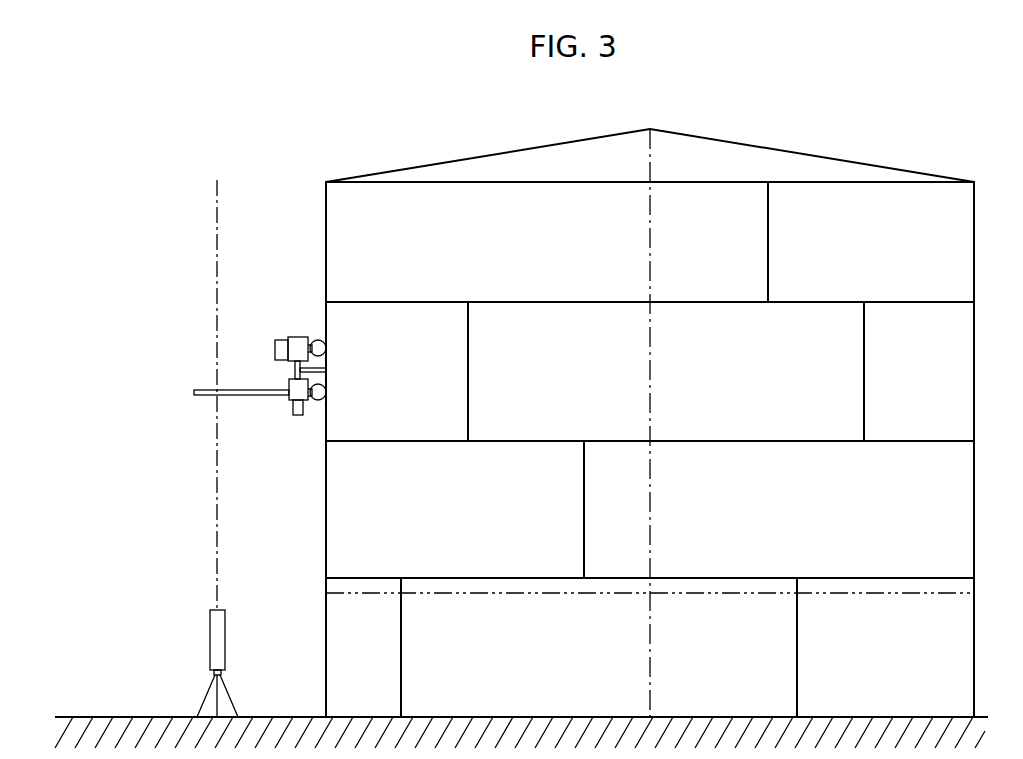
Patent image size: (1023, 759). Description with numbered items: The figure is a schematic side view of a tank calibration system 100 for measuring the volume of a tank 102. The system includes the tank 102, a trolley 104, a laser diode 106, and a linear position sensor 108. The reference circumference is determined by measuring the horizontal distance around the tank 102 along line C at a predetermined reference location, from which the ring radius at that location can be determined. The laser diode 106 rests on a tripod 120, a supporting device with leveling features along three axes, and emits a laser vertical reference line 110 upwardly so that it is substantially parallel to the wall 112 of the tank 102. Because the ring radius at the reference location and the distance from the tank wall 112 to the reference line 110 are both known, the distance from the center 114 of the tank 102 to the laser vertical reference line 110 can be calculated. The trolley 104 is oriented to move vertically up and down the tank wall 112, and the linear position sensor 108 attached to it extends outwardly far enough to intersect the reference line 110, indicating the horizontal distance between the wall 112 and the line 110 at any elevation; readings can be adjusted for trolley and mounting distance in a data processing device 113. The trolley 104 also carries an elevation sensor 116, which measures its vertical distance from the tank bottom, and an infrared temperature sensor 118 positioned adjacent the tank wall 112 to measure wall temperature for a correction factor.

The system 100 is at (155, 150).
The tank 102 is at (812, 152).
The trolley 104 is at (255, 325).
The laser diode 106 is at (208, 626).
The linear position sensor 108 is at (240, 390).
The laser vertical reference line 110 is at (217, 519).
The wall 112 is at (326, 244).
The data processing device 113 is at (275, 350).
The center 114 is at (652, 394).
The elevation sensor 116 is at (298, 415).
The infrared temperature sensor 118 is at (326, 364).
The tripod 120 is at (228, 692).
The line C is at (702, 594).